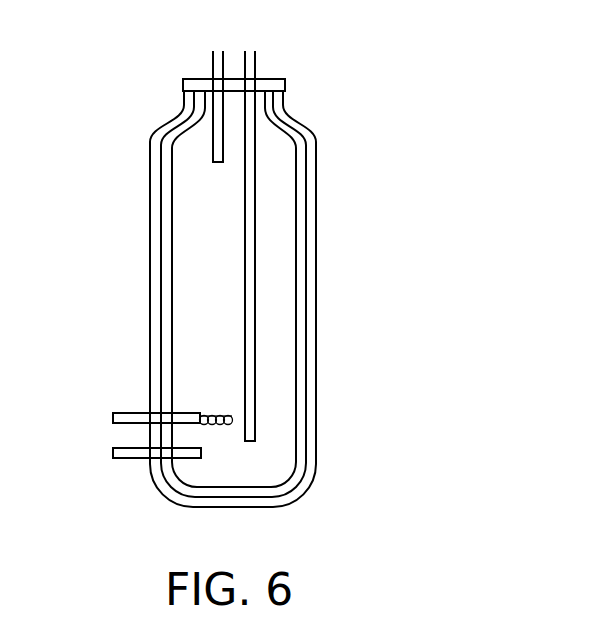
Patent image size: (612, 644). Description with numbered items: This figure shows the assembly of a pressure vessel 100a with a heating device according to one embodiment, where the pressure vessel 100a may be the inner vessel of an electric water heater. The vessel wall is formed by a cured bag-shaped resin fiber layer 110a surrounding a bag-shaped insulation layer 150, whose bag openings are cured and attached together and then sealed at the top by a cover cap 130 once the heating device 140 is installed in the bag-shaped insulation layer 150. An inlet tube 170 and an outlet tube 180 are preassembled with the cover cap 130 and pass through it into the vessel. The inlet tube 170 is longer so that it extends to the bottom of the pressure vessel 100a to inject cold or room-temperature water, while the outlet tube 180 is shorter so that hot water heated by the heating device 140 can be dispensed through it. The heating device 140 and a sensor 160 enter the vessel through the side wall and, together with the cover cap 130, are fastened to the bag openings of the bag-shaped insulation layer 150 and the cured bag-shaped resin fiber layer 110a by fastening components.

The pressure vessel 100a is at (520, 549).
The cured bag-shaped resin fiber layer 110a is at (312, 406).
The cover cap 130 is at (270, 86).
The heating device 140 is at (128, 420).
The bag-shaped insulation layer 150 is at (300, 347).
The sensor 160 is at (128, 455).
The inlet tube 170 is at (252, 281).
The outlet tube 180 is at (218, 157).